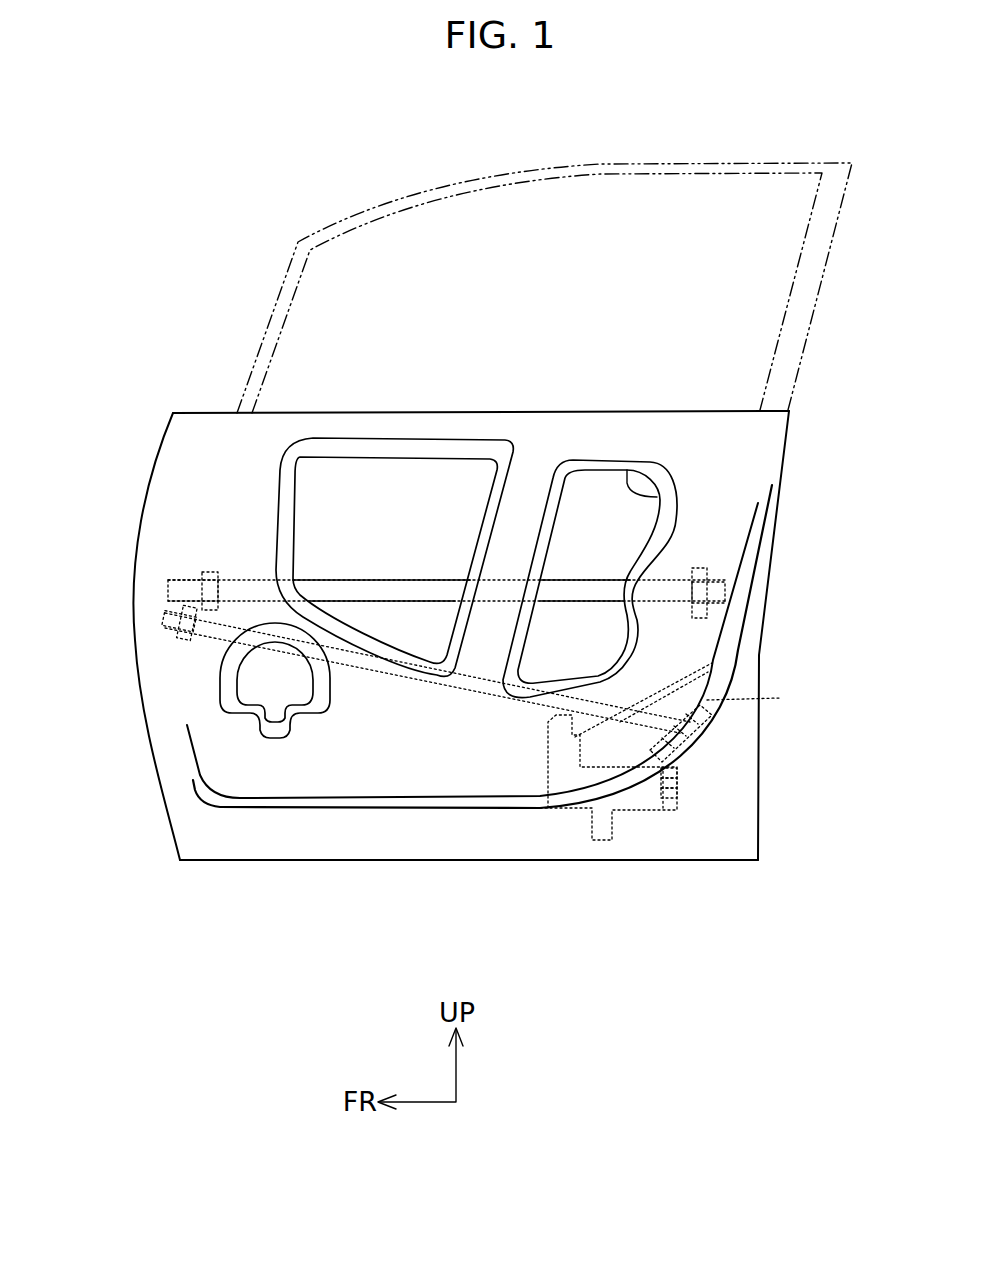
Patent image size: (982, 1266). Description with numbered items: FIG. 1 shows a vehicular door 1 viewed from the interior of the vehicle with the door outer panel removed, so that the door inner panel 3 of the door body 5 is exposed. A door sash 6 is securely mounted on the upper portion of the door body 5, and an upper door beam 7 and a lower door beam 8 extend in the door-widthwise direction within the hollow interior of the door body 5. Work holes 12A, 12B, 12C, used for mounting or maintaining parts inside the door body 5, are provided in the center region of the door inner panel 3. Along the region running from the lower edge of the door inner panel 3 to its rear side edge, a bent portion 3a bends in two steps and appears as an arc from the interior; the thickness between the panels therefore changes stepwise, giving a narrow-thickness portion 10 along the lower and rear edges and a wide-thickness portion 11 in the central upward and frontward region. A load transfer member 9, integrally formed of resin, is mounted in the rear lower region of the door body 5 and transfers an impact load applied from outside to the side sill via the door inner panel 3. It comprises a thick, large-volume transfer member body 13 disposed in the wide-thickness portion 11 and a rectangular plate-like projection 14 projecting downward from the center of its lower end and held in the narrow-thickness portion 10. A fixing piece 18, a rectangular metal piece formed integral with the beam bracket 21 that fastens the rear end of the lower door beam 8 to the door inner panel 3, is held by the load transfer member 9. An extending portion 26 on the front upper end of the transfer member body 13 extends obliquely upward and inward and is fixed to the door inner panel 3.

The vehicular door 1 is at (730, 146).
The door inner panel 3 is at (505, 459).
The door body 5 is at (757, 752).
The bent portion 3a is at (517, 810).
The door sash 6 is at (282, 287).
The upper door beam 7 is at (597, 587).
The lower door beam 8 is at (367, 662).
The load transfer member 9 is at (621, 813).
The narrow-thickness portion 10 is at (463, 850).
The wide-thickness portion 11 is at (433, 780).
The work hole 12A is at (657, 497).
The work hole 12B is at (297, 493).
The work hole 12C is at (243, 692).
The transfer member body 13 is at (658, 812).
The projection 14 is at (592, 838).
The fixing piece 18 is at (680, 774).
The beam bracket 21 is at (745, 712).
The extending portion 26 is at (707, 672).